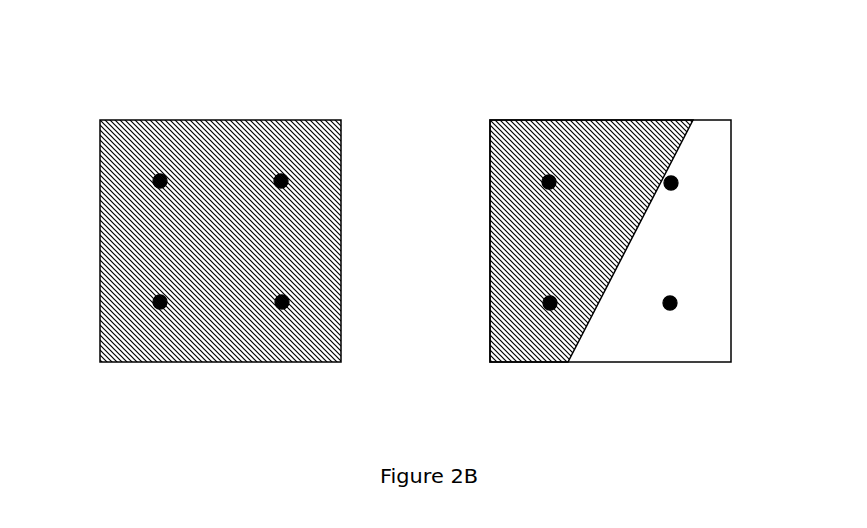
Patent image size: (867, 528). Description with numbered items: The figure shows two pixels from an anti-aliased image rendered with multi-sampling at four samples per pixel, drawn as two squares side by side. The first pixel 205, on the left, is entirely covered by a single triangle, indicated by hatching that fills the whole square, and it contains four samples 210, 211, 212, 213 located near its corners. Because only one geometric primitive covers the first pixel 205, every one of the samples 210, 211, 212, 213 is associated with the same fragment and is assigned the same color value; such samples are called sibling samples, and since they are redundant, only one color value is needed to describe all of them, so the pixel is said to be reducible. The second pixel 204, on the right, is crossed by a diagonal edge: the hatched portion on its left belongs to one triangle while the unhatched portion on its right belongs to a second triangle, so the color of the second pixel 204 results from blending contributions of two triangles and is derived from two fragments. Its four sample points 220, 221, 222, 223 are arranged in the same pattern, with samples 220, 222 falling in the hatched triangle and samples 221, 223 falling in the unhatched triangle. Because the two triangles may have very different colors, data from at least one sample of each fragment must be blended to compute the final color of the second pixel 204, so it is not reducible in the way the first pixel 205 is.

The first pixel 205 is at (237, 120).
The second pixel 204 is at (632, 120).
The sample 210 is at (160, 181).
The sample 211 is at (281, 181).
The sample 212 is at (160, 302).
The sample 213 is at (282, 302).
The first sample point of second region 220 is at (549, 182).
The second sample point of second region 221 is at (671, 183).
The third sample point of second region 222 is at (550, 303).
The fourth sample point of second region 223 is at (670, 303).